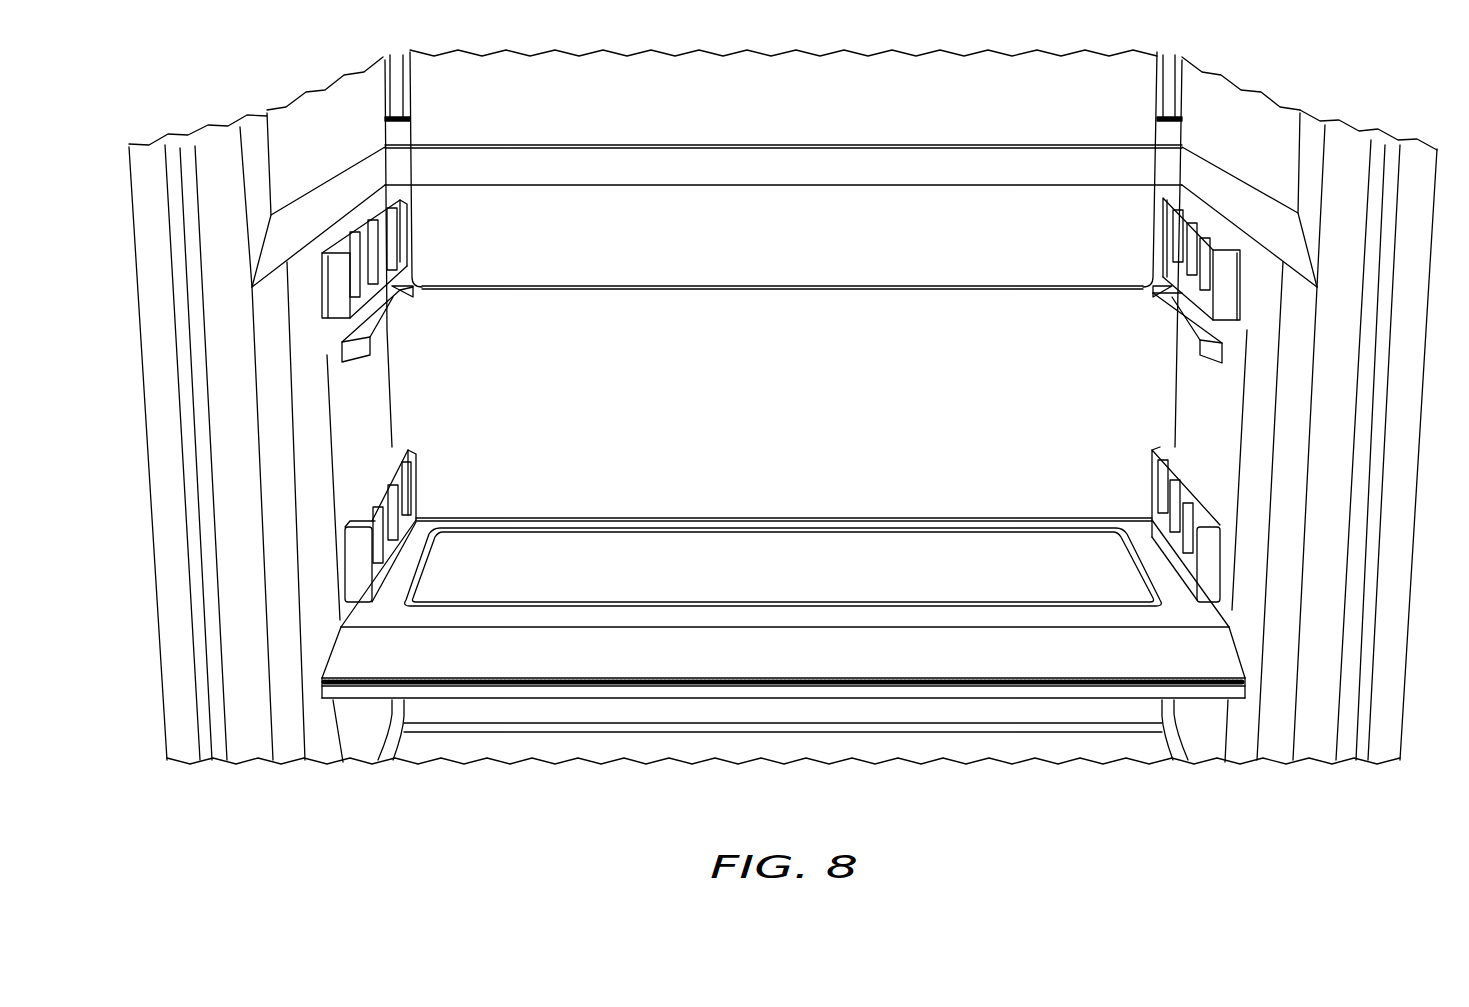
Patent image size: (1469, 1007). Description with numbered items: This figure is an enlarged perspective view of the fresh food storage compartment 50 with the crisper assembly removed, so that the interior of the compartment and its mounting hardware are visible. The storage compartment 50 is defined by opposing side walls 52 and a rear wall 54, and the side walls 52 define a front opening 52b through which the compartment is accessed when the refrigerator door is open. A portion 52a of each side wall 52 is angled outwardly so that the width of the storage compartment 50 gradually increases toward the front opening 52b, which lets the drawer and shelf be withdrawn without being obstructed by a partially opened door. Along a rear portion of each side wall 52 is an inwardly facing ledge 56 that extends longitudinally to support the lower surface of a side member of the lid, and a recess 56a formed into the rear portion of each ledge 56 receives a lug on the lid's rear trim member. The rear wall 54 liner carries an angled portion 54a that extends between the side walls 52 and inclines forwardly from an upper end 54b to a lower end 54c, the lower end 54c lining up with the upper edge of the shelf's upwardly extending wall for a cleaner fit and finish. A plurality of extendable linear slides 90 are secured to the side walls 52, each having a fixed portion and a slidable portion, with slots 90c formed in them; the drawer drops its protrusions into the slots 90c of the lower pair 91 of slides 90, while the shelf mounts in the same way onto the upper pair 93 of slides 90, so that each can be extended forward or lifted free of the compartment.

The storage compartment 50 is at (555, 105).
The side wall 52 is at (300, 397).
The angled portion of side wall 52a is at (285, 578).
The front opening 52b is at (583, 715).
The rear wall 54 is at (783, 170).
The angled portion of rear wall 54a is at (655, 170).
The upper end of angled portion 54b is at (892, 145).
The lower end of angled portion 54c is at (872, 188).
The ledge 56 is at (378, 340).
The recess 56a is at (410, 285).
The extendable linear slide 90 is at (440, 222).
The slot 90c is at (395, 239).
The lower pair of slides 91 is at (505, 508).
The upper pair of slides 93 is at (505, 246).